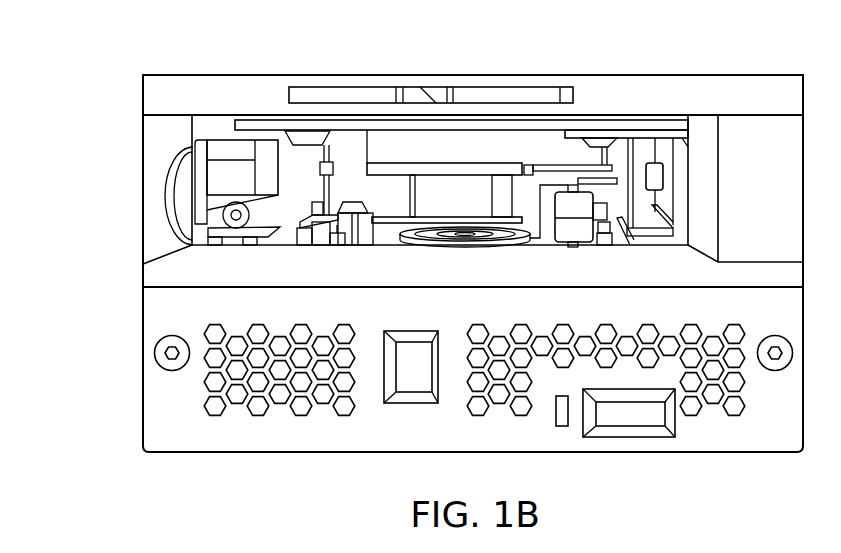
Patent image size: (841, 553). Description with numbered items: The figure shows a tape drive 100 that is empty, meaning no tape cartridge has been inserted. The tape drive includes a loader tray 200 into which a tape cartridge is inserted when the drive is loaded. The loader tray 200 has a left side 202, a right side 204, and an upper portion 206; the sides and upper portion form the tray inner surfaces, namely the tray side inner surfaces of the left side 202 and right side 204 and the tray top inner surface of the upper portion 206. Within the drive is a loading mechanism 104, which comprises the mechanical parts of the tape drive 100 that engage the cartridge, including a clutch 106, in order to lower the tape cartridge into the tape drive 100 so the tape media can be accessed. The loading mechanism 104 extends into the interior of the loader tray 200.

The tape drive 100 is at (675, 74).
The loading mechanism 104 is at (522, 205).
The clutch 106 is at (470, 245).
The loader tray 200 is at (552, 119).
The left side 202 is at (200, 193).
The right side 204 is at (681, 188).
The upper portion 206 is at (483, 116).